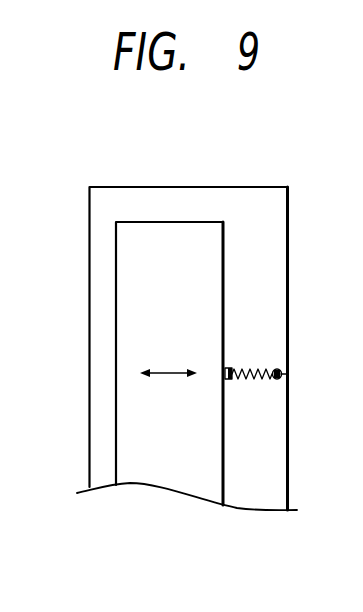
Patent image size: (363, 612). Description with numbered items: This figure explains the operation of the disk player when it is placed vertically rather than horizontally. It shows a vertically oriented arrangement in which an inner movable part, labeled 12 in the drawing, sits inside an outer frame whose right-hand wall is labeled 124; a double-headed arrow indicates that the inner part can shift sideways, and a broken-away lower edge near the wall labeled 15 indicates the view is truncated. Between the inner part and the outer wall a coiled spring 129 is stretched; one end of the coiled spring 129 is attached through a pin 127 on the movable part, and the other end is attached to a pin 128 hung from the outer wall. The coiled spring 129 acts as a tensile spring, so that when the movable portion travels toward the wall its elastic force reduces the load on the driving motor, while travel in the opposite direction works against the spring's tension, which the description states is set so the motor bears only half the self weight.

The sliding member 12 is at (168, 212).
The side wall of sliding member 15 is at (223, 481).
The housing 124 is at (290, 478).
The pin 127 is at (225, 379).
The pin 128 is at (287, 373).
The coiled spring 129 is at (262, 370).